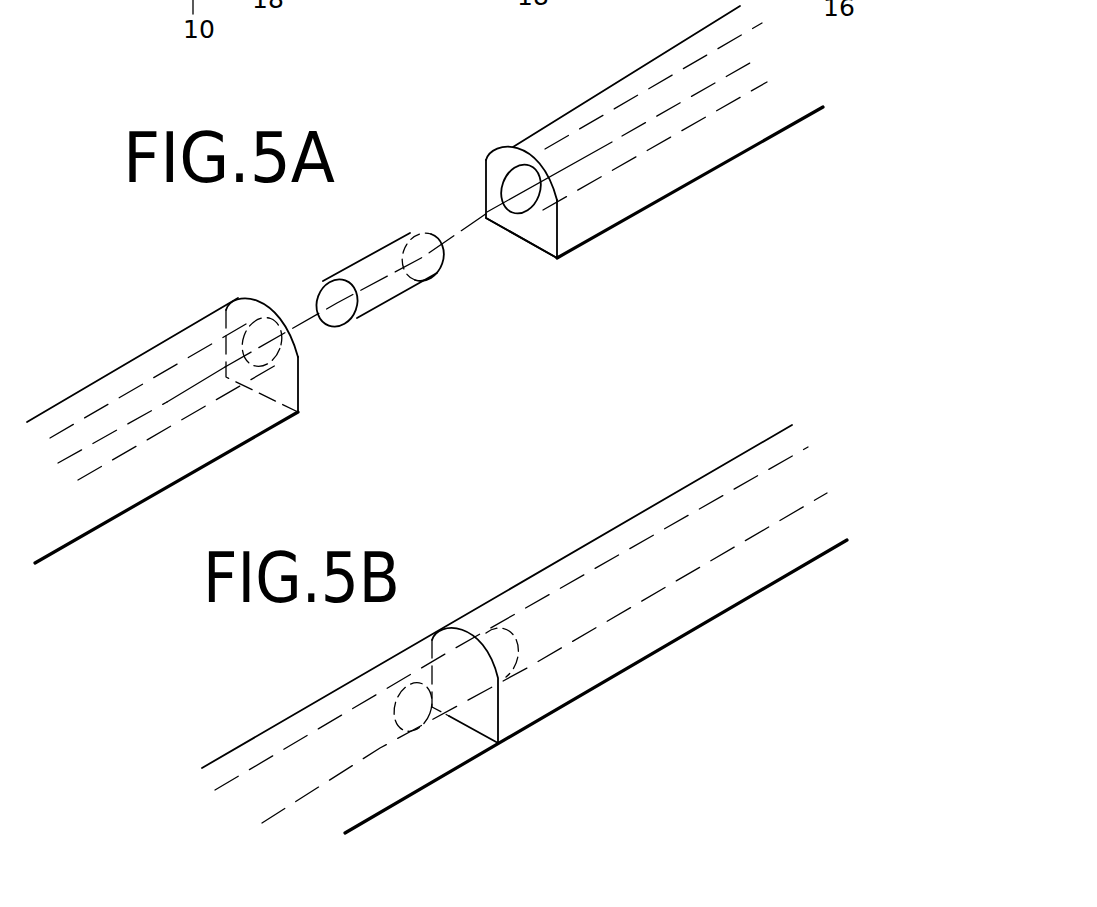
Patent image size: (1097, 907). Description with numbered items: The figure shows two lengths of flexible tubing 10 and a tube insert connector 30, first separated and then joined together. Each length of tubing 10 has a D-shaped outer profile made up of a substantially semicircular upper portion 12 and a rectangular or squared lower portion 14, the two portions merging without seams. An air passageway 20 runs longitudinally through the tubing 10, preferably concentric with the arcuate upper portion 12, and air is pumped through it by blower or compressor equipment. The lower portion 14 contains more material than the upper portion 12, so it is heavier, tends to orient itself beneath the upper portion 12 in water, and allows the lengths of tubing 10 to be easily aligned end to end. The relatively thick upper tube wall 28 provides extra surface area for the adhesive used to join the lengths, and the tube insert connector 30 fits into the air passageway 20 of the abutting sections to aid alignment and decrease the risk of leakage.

In FIG. 5A, the flexible tubing 10 is at (177, 490).
In FIG. 5B, the flexible tubing 10 is at (272, 720).
In FIG. 5A, the upper portion 12 is at (520, 160).
In FIG. 5A, the lower portion 14 is at (561, 236).
In FIG. 5A, the air passageway 20 is at (500, 168).
In FIG. 5B, the air passageway 20 is at (630, 550).
In FIG. 5A, the upper tube wall 28 is at (268, 312).
In FIG. 5A, the tube insert connector 30 is at (415, 289).
In FIG. 5B, the tube insert connector 30 is at (463, 655).